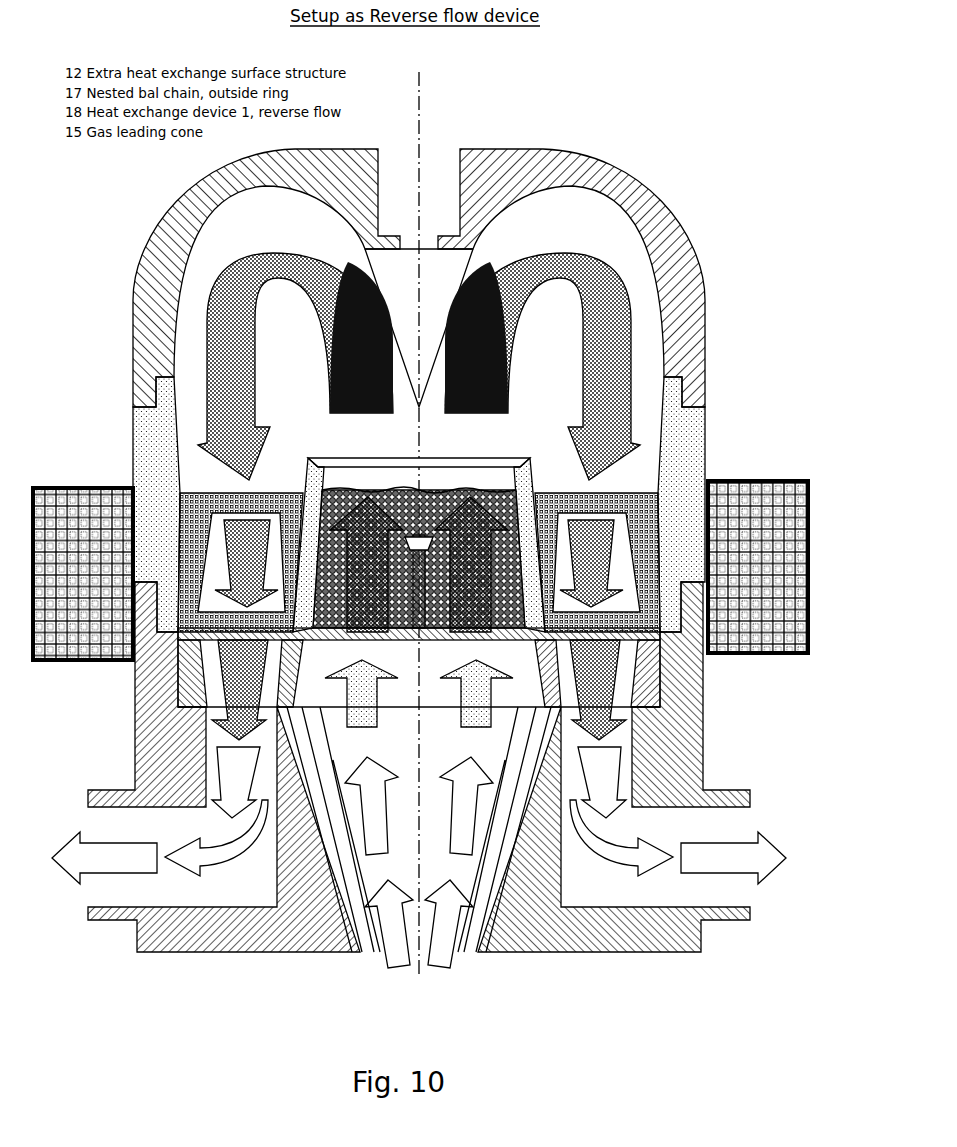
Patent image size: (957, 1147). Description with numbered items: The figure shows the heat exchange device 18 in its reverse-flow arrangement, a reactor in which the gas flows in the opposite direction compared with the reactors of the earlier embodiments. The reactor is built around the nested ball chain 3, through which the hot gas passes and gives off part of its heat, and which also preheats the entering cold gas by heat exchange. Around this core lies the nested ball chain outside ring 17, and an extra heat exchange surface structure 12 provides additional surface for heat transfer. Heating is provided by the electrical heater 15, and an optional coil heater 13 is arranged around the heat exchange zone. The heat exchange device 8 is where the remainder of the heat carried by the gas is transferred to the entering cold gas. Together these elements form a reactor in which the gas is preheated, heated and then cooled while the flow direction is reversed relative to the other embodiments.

The nested ball chain 3 is at (326, 530).
The heat exchange device 8 is at (502, 833).
The extra heat exchange surface structure 12 is at (198, 528).
The coil heater 13 is at (765, 493).
The electrical heater 15 is at (393, 289).
The nested ball chain, outside ring 17 is at (198, 528).
The heat exchange device, reverse flow 18 is at (142, 425).